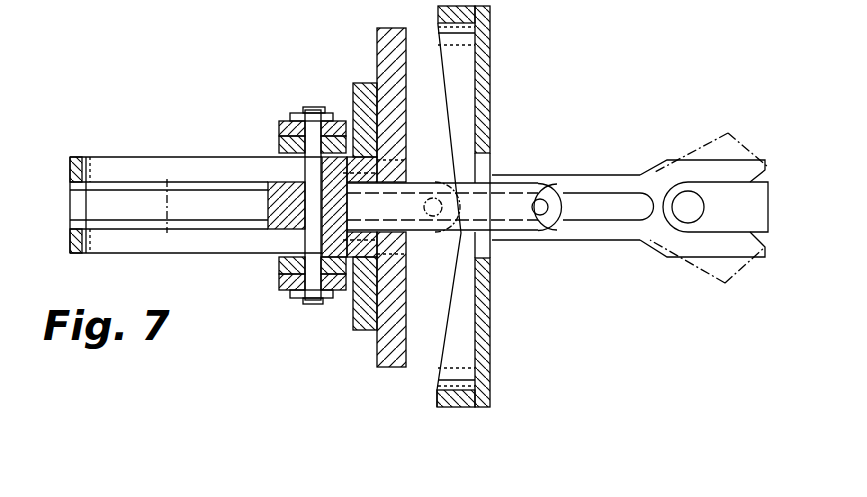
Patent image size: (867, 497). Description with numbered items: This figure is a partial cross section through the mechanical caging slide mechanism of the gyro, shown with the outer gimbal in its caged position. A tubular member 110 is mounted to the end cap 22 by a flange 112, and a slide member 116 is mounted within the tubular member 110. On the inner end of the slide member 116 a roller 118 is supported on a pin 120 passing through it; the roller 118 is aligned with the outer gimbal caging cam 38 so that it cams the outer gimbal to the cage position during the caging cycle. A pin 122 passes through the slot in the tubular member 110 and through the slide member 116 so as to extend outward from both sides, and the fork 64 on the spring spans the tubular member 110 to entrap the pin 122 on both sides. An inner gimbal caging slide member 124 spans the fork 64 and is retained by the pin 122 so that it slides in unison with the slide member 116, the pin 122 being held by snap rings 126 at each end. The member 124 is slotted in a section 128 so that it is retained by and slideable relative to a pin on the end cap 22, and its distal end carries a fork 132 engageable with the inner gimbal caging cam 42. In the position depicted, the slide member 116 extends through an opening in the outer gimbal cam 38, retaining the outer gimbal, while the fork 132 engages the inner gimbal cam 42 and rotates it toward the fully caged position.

The end cap 22 is at (388, 45).
The outer gimbal caging cam 38 is at (487, 58).
The inner gimbal caging cam 42 is at (765, 217).
The fork 64 is at (280, 142).
The tubular member 110 is at (100, 163).
The flange 112 is at (370, 88).
The slide member 116 is at (413, 188).
The roller 118 is at (573, 217).
The pin 120 is at (538, 215).
The pin 122 is at (313, 227).
The inner gimbal caging slide member 124 is at (280, 127).
The snap rings 126 is at (295, 112).
The slotted section 128 is at (620, 213).
The fork 132 is at (747, 163).